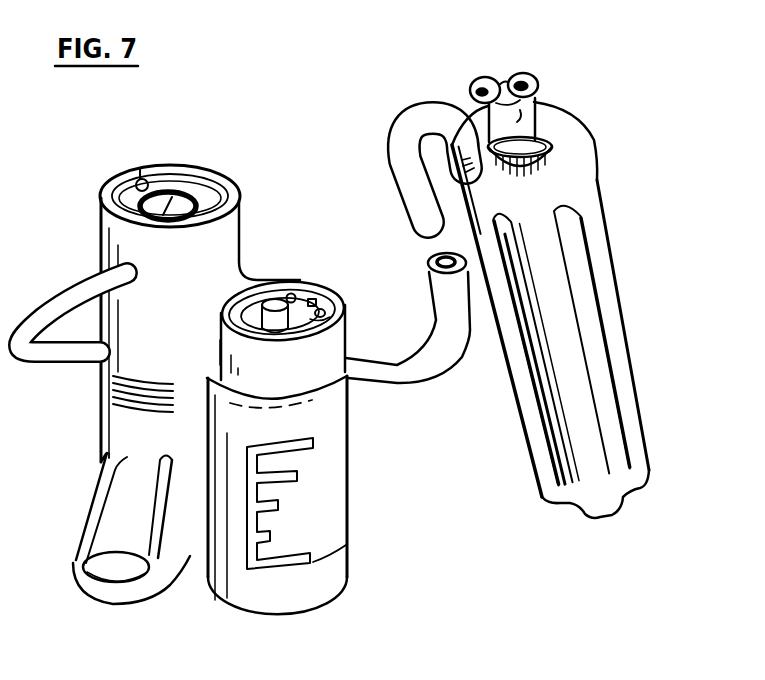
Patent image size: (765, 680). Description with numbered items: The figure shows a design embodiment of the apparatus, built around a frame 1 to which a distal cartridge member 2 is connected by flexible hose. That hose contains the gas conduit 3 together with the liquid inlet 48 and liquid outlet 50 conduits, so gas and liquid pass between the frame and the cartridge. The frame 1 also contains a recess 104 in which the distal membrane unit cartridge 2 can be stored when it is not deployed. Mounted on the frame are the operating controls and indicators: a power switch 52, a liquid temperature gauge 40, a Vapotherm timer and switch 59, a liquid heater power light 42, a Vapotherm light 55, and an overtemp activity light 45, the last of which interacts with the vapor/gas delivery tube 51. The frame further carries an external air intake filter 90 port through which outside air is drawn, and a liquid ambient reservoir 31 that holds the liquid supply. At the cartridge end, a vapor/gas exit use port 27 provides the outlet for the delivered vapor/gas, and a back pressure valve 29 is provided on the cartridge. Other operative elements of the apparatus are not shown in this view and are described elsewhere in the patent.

The frame 1 is at (190, 556).
The distal cartridge member 2 is at (595, 303).
The gas conduit 3 is at (433, 246).
The vapor/gas exit use port 27 is at (482, 76).
The back pressure valve 29 is at (553, 136).
The liquid ambient reservoir 31 is at (330, 511).
The liquid temperature gauge 40 is at (170, 197).
The liquid heater power light 42 is at (298, 290).
The overtemp activity light 45 is at (327, 311).
The liquid inlet 48 is at (428, 264).
The liquid outlet 50 is at (460, 277).
The vapor/gas delivery tube 51 is at (538, 103).
The power switch 52 is at (140, 170).
The Vapotherm light 55 is at (317, 293).
The Vapotherm timer and switch 59 is at (273, 298).
The external air intake filter port 90 is at (114, 393).
The recess 104 is at (113, 505).